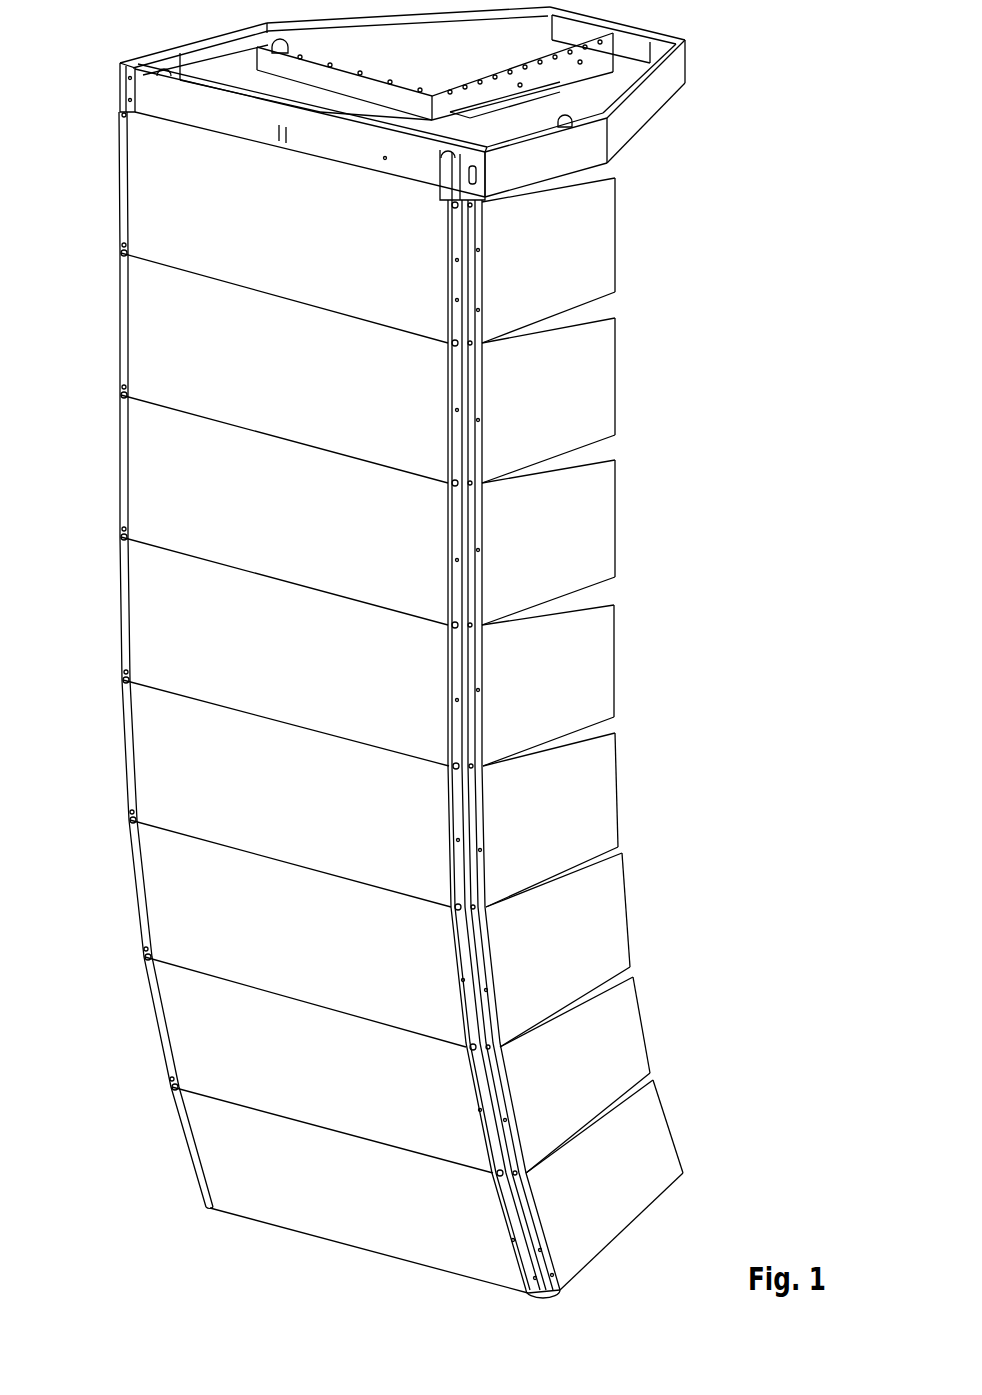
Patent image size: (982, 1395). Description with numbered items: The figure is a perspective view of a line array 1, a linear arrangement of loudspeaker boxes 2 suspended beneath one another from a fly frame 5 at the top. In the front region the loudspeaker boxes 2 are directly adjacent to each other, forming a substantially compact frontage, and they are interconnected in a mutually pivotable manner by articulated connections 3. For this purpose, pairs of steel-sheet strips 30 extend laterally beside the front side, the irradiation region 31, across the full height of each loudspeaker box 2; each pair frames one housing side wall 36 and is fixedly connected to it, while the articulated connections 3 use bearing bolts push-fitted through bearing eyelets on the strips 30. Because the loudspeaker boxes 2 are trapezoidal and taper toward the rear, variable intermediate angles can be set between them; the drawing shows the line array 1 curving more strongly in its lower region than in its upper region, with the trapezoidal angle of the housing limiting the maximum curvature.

The line array 1 is at (756, 99).
The loudspeaker box 2 is at (610, 260).
The articulated connection 3 is at (118, 106).
The fly frame 5 is at (641, 114).
The steel-sheet strip 30 is at (460, 295).
The irradiation region 31 is at (256, 238).
The housing side wall 36 is at (526, 258).